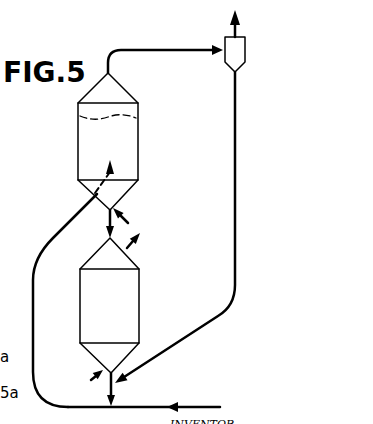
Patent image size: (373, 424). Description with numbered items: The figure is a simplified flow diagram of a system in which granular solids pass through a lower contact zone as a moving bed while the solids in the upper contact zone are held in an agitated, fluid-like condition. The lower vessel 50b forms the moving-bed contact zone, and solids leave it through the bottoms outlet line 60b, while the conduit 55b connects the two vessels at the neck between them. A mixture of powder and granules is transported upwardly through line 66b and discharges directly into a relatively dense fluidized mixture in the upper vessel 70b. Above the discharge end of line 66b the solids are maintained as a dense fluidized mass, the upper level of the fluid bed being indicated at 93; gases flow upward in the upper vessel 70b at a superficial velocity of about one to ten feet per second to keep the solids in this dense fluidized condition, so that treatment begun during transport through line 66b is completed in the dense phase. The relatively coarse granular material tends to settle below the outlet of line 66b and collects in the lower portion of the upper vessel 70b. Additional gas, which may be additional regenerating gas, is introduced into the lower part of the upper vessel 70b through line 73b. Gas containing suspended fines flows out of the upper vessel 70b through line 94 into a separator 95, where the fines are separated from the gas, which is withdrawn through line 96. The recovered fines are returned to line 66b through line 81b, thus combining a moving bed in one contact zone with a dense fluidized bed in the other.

The line 94 is at (140, 50).
The separator 95 is at (242, 56).
The line 96 is at (233, 34).
The line 81b is at (234, 98).
The upper vessel 70b is at (138, 156).
The upper level of the fluid bed 93 is at (78, 116).
The line 73b is at (124, 210).
The downcomer conduit 55b is at (107, 221).
The lower vessel 50b is at (135, 303).
The line 66b is at (43, 388).
The bottoms outlet line 60b is at (115, 393).